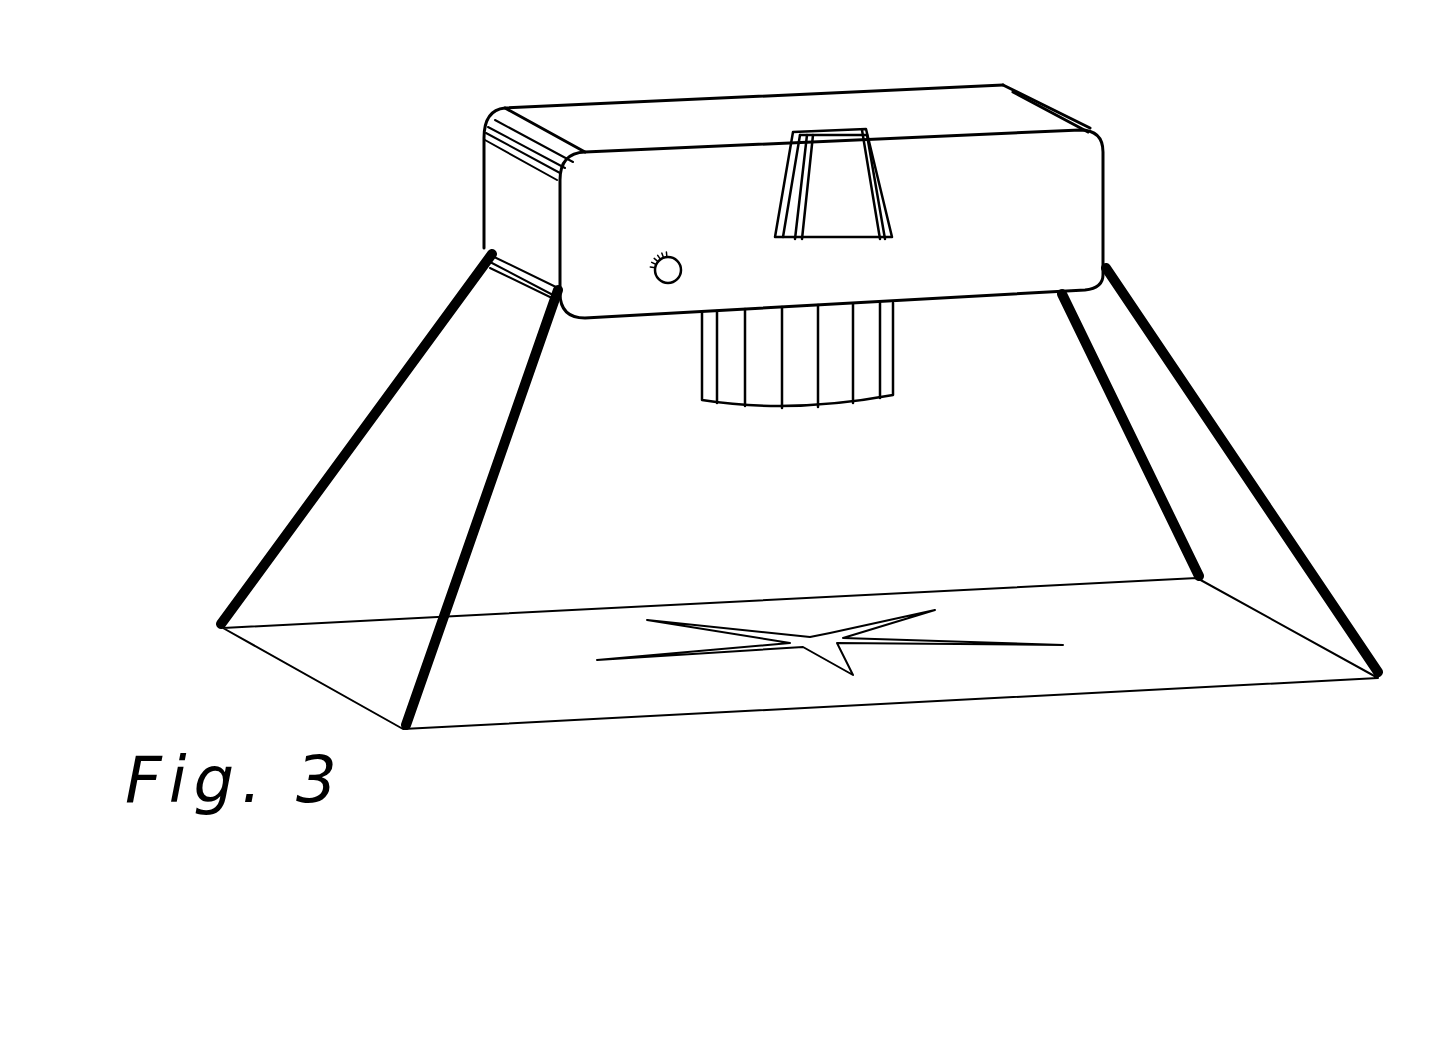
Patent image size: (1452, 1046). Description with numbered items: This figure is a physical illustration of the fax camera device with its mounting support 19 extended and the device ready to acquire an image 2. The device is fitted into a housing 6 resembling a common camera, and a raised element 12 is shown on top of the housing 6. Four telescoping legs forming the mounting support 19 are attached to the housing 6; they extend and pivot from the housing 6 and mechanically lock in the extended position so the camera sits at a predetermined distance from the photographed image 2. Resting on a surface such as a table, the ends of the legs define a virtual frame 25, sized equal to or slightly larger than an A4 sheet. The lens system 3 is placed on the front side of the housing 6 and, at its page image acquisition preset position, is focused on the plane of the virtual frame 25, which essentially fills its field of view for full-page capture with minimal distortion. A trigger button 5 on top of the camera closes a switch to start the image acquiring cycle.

The image 2 is at (850, 627).
The lens system 3 is at (900, 400).
The trigger button 5 is at (650, 287).
The housing 6 is at (1107, 198).
The handle 12 is at (792, 117).
The mounting support 19 is at (1248, 445).
The virtual frame 25 is at (900, 713).